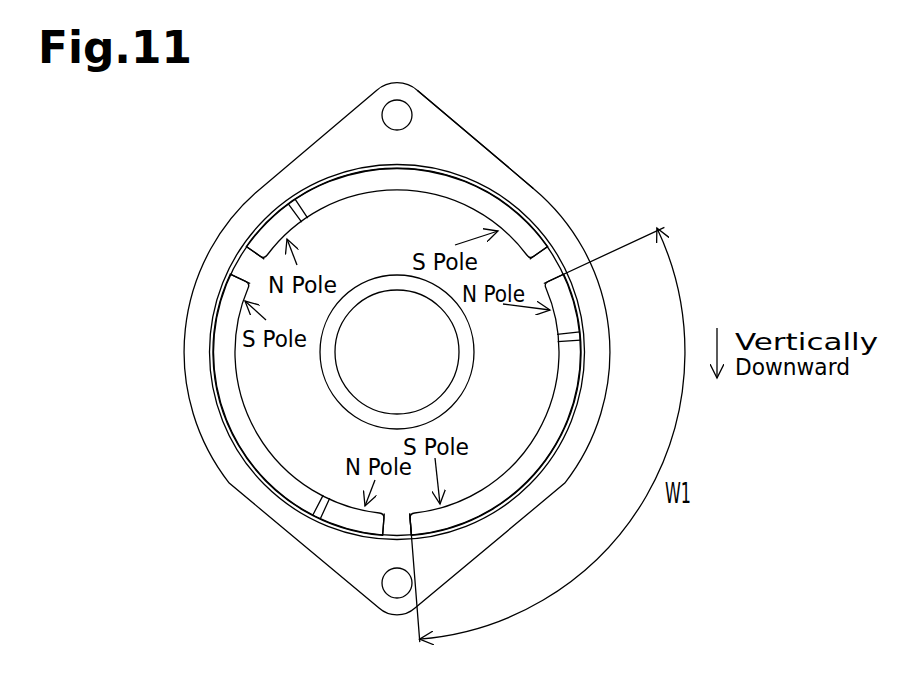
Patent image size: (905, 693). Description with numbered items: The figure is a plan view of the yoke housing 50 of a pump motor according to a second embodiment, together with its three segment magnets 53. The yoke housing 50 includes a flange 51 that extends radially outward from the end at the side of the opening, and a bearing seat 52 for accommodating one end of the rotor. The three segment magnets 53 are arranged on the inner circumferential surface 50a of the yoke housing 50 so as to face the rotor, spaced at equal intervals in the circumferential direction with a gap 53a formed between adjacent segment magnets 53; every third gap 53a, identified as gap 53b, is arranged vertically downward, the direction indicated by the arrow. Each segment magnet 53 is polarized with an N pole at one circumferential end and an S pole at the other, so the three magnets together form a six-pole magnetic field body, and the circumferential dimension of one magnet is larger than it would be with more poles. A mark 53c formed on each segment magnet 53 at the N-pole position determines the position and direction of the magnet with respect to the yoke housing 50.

The yoke housing 50 is at (296, 158).
The inner circumferential surface 50a is at (230, 428).
The flange 51 is at (469, 139).
The bearing seat 52 is at (458, 383).
The segment magnet 53 is at (400, 187).
The gap 53a is at (245, 247).
The gap 53b is at (343, 570).
The mark 53c is at (308, 219).